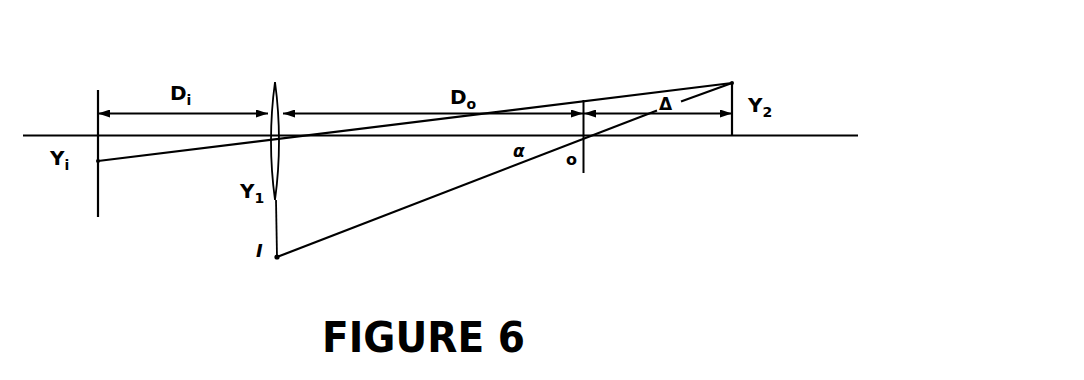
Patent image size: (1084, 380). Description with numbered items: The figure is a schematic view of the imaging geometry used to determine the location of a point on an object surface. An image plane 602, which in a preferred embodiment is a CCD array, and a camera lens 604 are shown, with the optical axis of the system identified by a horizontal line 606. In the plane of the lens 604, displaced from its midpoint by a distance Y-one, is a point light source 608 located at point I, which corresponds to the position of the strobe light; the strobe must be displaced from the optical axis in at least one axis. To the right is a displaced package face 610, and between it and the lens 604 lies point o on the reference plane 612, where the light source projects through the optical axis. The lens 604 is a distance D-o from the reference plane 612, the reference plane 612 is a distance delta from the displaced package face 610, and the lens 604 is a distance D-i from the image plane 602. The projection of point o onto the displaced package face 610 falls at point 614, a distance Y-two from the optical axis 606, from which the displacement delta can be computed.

The image plane 602 is at (98, 92).
The camera lens 604 is at (277, 96).
The optical axis 606 is at (647, 137).
The point light source 608 is at (277, 257).
The displaced package face 610 is at (733, 92).
The reference plane 612 is at (583, 170).
The point 614 is at (732, 83).